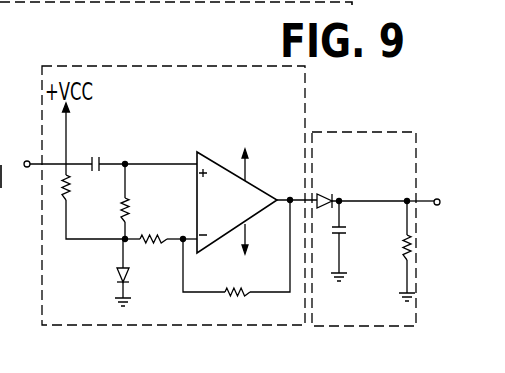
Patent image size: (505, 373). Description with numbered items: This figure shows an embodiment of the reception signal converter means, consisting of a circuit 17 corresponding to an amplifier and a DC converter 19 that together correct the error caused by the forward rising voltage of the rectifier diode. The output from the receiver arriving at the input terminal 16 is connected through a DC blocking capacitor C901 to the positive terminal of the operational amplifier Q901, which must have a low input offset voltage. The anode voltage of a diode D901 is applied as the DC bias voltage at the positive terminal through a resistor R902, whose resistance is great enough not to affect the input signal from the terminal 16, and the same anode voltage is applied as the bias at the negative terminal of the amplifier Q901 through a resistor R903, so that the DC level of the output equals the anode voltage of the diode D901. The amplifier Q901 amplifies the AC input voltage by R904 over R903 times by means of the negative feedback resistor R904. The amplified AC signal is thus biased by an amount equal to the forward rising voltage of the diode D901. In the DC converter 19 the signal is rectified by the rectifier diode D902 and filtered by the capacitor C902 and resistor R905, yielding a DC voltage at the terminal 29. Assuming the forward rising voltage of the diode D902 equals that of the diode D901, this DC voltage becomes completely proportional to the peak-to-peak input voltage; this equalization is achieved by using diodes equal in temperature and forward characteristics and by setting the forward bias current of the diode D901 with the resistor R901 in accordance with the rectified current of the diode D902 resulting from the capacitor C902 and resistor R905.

The input terminal 16 is at (50, 151).
The amplifier circuit 17 is at (173, 181).
The DC converter 19 is at (364, 214).
The output terminal 29 is at (427, 188).
The DC blocking capacitor C901 is at (141, 150).
The resistor R901 is at (93, 207).
The resistor R902 is at (148, 203).
The resistor R903 is at (161, 254).
The diode D901 is at (98, 272).
The operational amplifier Q901 is at (246, 202).
The negative feedback resistor R904 is at (236, 264).
The rectifier diode D902 is at (360, 187).
The capacitor C902 is at (365, 241).
The resistor R905 is at (381, 250).